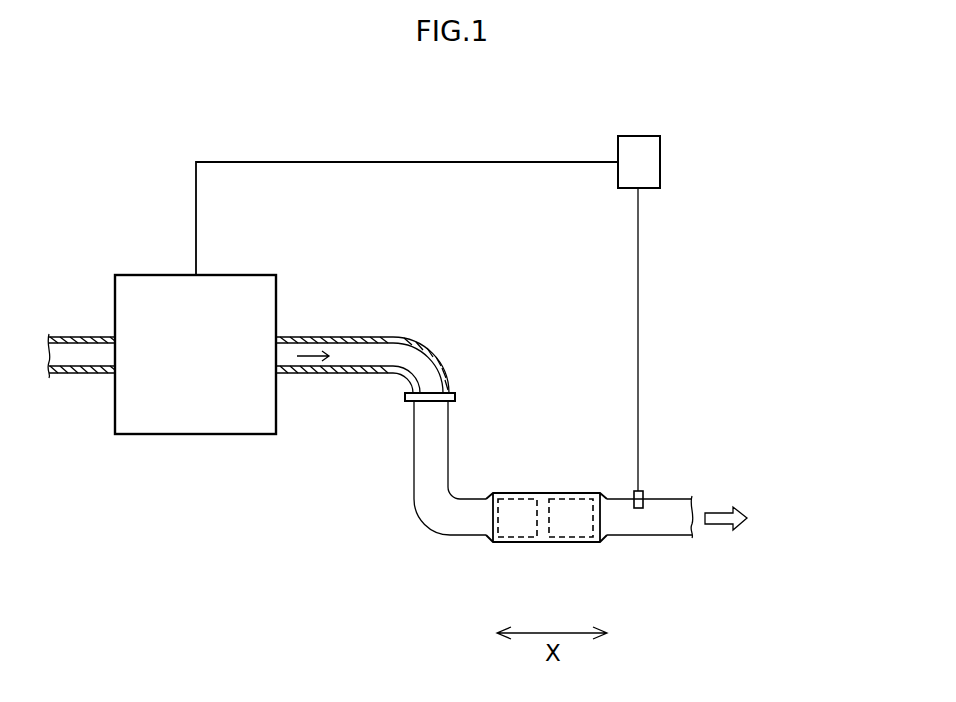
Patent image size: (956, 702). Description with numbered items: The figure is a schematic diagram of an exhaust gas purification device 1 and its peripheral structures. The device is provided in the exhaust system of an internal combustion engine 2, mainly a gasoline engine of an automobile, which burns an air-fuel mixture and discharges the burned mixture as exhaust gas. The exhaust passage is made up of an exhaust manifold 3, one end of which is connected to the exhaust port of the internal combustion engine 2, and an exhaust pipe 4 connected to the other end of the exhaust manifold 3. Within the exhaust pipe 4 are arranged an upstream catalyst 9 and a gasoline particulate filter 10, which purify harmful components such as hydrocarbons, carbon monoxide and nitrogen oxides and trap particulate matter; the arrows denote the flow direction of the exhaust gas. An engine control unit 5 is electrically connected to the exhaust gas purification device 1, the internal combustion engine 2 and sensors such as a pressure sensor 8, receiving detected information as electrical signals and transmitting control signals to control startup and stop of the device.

The exhaust gas purification device 1 is at (780, 153).
The internal combustion engine 2 is at (160, 440).
The exhaust manifold 3 is at (367, 336).
The exhaust pipe 4 is at (413, 447).
The engine control unit (ECU) 5 is at (660, 152).
The pressure sensor 8 is at (640, 508).
The upstream catalyst 9 is at (520, 492).
The gasoline particulate filter (GPF) 10 is at (573, 492).